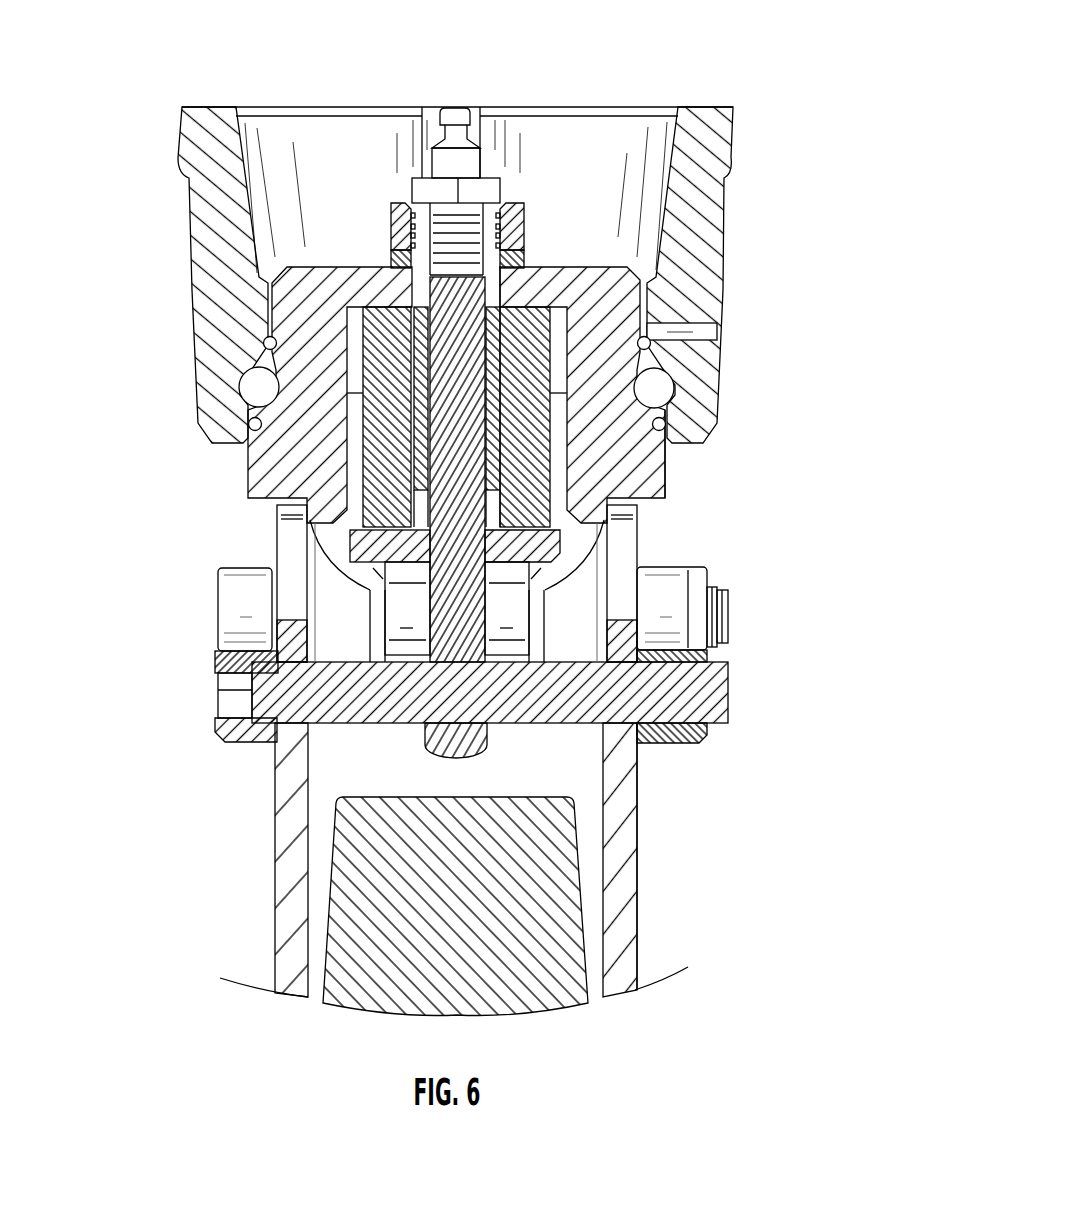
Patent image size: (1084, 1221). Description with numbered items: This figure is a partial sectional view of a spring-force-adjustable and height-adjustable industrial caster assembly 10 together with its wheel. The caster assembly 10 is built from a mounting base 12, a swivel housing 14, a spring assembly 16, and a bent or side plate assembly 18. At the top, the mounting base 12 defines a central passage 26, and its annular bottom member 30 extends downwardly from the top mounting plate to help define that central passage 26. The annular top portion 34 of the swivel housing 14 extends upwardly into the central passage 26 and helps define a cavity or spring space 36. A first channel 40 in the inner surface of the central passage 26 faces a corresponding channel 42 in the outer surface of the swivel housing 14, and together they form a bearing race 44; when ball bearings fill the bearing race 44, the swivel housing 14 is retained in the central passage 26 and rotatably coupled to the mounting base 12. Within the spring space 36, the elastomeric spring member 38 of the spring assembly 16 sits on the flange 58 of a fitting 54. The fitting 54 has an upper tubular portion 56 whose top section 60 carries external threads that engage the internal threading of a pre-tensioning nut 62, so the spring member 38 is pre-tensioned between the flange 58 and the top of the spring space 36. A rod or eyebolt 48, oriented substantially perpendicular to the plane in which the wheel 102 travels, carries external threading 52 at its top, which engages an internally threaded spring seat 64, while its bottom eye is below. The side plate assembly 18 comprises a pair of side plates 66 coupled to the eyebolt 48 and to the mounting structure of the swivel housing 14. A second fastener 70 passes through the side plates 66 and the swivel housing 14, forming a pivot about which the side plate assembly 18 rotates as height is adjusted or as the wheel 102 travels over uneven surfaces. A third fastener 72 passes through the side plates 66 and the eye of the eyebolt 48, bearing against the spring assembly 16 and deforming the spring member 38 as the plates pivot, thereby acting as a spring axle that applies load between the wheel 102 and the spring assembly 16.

The caster assembly 10 is at (717, 42).
The mounting base 12 is at (718, 272).
The swivel housing 14 is at (668, 488).
The spring assembly 16 is at (357, 543).
The side plate assembly 18 is at (642, 875).
The central passage 26 is at (590, 143).
The bottom member 30 is at (712, 370).
The annular top portion 34 is at (627, 277).
The spring space 36 is at (547, 553).
The spring member 38 is at (373, 493).
The first channel 40 is at (256, 426).
The corresponding channel 42 is at (239, 384).
The bearing race 44 is at (667, 394).
The rod or eyebolt 48 is at (440, 743).
The external threading 52 is at (448, 228).
The fitting 54 is at (502, 457).
The upper portion 56 is at (498, 283).
The flange 58 is at (567, 507).
The top section 60 is at (503, 198).
The pre-tensioning nut 62 is at (400, 225).
The spring seat 64 is at (472, 190).
The side plates 66 is at (277, 853).
The second fastener 70 is at (245, 598).
The third fastener 72 is at (217, 730).
The wheel 102 is at (547, 992).